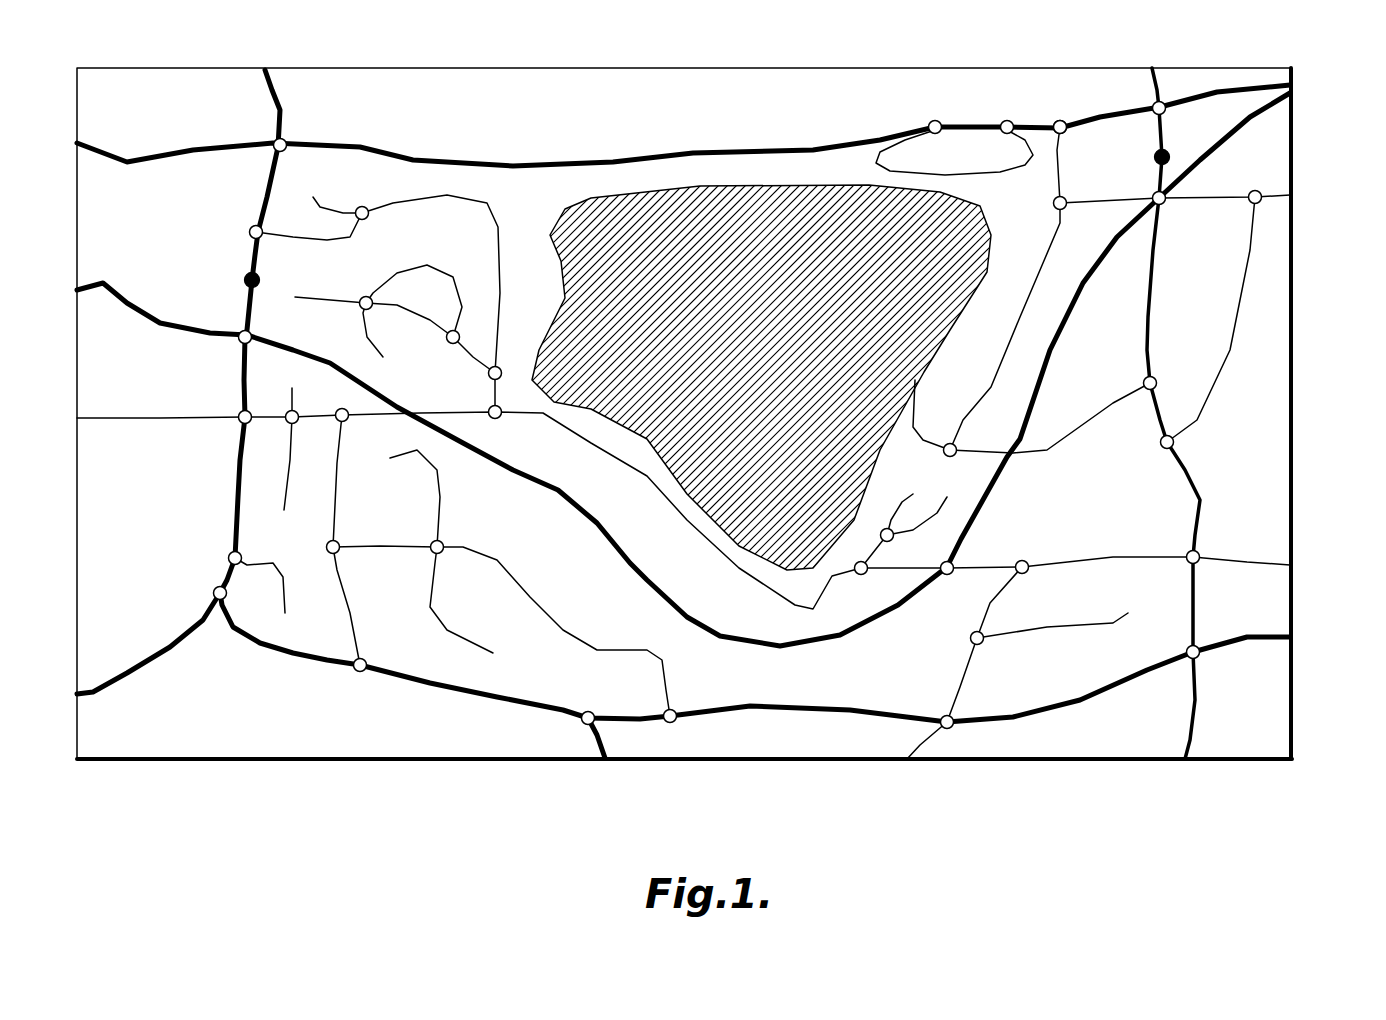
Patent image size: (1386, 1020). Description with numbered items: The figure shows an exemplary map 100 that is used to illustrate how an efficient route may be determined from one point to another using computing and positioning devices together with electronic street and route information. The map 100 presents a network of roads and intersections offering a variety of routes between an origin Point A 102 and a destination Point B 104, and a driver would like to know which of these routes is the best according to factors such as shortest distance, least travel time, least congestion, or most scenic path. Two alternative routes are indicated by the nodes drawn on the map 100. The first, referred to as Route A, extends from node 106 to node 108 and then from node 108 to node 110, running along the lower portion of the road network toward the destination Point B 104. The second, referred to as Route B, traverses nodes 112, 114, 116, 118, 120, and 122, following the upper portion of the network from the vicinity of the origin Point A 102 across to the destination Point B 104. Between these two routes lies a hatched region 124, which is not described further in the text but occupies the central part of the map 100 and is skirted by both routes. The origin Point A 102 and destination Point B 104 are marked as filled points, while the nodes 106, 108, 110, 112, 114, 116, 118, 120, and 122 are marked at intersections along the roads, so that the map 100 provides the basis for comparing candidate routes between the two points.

The map 100 is at (828, 68).
The origin Point A 102 is at (137, 244).
The destination Point B 104 is at (1262, 145).
The node 106 is at (135, 383).
The node 108 is at (922, 693).
The node 110 is at (1268, 265).
The node 112 is at (139, 191).
The node 114 is at (190, 90).
The node 116 is at (960, 81).
The node 118 is at (1033, 81).
The node 120 is at (1088, 81).
The node 122 is at (1195, 72).
The hatched avoidance region 124 is at (758, 304).